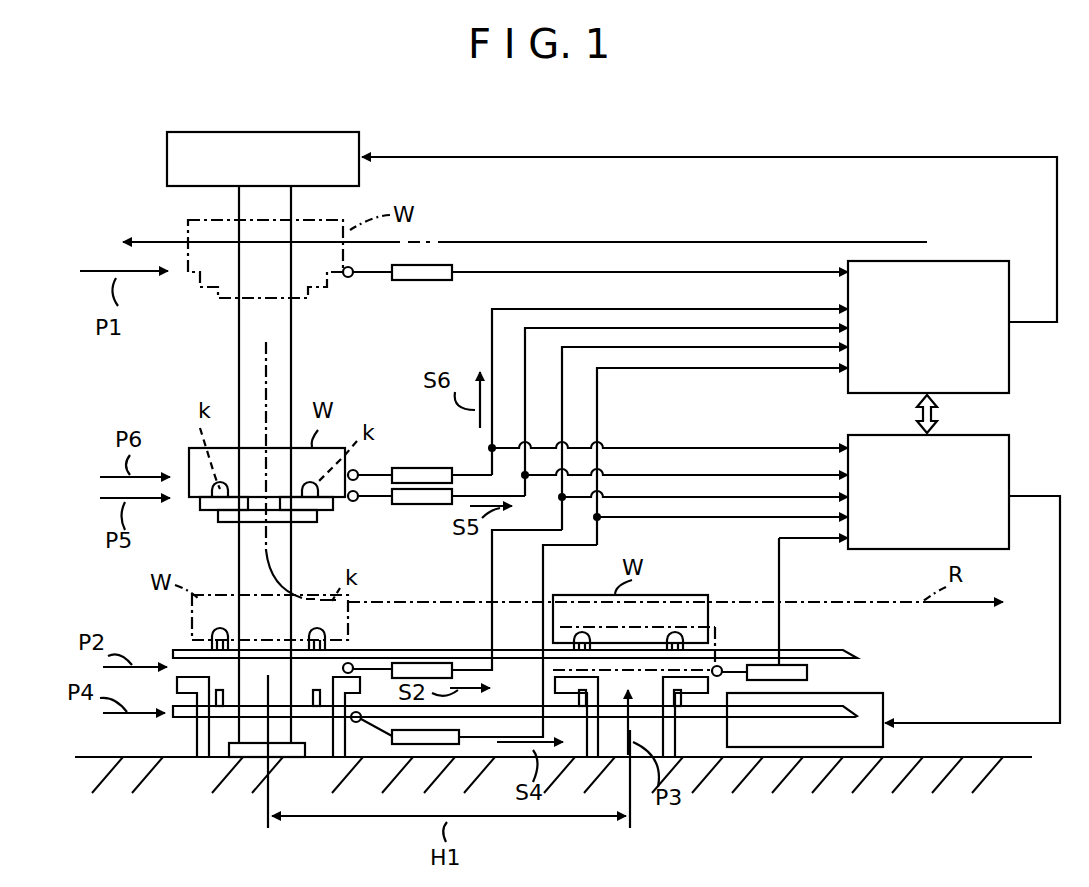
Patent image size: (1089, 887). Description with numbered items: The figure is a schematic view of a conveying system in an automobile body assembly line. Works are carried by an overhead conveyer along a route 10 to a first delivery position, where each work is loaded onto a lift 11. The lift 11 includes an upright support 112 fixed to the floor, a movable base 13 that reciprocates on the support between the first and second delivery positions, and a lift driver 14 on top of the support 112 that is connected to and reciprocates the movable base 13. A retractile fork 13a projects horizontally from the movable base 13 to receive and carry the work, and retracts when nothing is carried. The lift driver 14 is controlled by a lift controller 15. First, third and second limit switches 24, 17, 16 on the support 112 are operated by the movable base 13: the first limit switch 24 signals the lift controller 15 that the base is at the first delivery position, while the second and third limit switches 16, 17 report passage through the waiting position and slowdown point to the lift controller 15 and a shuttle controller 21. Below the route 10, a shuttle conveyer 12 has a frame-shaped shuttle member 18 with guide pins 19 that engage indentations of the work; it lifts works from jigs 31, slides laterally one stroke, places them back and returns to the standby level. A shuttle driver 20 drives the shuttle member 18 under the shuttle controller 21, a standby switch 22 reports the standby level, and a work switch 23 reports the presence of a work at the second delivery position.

The route 10 is at (660, 242).
The lift 11 is at (128, 180).
The shuttle conveyer 12 is at (733, 590).
The movable base 13 is at (226, 522).
The retractile fork 13a is at (205, 502).
The lift driver 14 is at (282, 135).
The lift controller 15 is at (1010, 360).
The second limit switch 16 is at (420, 504).
The third limit switch 17 is at (425, 468).
The shuttle member 18 is at (822, 658).
The guide pins 19 is at (212, 645).
The shuttle driver 20 is at (884, 708).
The shuttle controller 21 is at (1010, 465).
The standby switch 22 is at (405, 757).
The work switch 23 is at (430, 663).
The first limit switch 24 is at (430, 283).
The jigs 31 is at (200, 757).
The support 112 is at (283, 349).